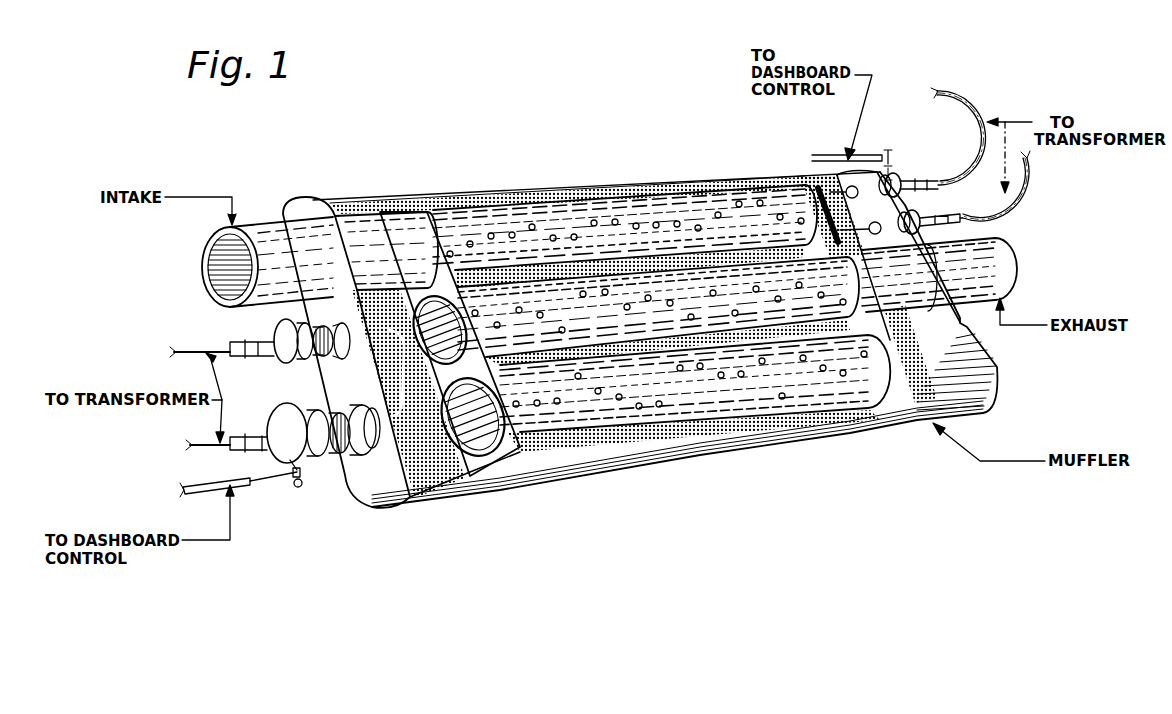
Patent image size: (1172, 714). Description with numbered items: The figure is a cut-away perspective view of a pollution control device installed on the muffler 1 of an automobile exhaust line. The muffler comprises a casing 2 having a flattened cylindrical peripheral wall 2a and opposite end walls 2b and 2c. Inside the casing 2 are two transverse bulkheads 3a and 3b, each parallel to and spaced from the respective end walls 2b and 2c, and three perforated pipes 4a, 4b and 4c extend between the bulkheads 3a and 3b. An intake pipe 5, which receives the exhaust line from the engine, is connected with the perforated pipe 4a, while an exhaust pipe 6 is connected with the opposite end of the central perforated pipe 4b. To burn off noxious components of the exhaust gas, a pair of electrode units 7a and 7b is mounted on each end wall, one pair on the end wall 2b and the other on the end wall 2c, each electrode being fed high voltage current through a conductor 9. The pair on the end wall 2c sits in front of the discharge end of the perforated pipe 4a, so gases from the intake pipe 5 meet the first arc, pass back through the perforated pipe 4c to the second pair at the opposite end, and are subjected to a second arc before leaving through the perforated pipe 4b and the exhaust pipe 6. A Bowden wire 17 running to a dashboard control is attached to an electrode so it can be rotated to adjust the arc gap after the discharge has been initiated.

The muffler 1 is at (890, 428).
The casing 2 is at (640, 450).
The flattened cylindrical peripheral wall 2a is at (490, 473).
The end wall 2b is at (372, 490).
The end wall 2c is at (947, 333).
The transverse bulkhead 3a is at (415, 210).
The transverse bulkhead 3b is at (797, 187).
The perforated pipe 4a is at (577, 215).
The central perforated pipe 4b is at (673, 313).
The perforated pipe 4c is at (760, 390).
The intake pipe 5 is at (264, 226).
The exhaust pipe 6 is at (1000, 255).
The electrode unit 7a is at (283, 331).
The electrode unit 7b is at (290, 418).
The conductor 9 is at (190, 350).
The Bowden wire 17 is at (245, 478).